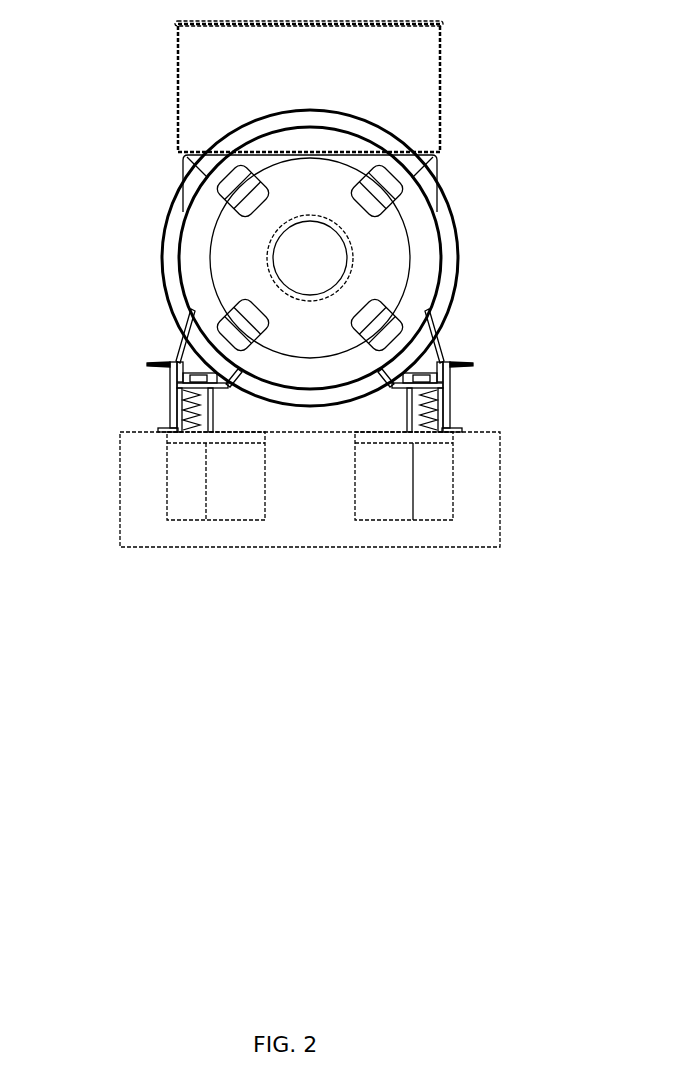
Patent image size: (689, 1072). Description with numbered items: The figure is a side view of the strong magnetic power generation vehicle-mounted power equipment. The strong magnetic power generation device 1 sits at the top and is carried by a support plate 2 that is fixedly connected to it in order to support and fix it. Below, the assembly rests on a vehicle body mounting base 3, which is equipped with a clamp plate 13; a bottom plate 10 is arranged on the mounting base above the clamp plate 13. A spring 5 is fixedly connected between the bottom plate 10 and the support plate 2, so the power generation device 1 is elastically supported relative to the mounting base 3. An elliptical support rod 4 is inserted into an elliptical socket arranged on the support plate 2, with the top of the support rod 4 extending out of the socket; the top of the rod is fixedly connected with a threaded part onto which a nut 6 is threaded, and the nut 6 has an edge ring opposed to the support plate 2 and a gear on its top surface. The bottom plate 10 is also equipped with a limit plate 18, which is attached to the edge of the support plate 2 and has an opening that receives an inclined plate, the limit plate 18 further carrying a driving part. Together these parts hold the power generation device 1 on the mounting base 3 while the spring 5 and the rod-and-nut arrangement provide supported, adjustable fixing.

The strong magnetic power generation device 1 is at (437, 258).
The support plate 2 is at (190, 320).
The vehicle body mounting base 3 is at (482, 525).
The support rod 4 is at (207, 405).
The spring 5 is at (450, 378).
The nut 6 is at (180, 357).
The bottom plate 10 is at (435, 437).
The clamp plate 13 is at (438, 488).
The limit plate 18 is at (173, 417).